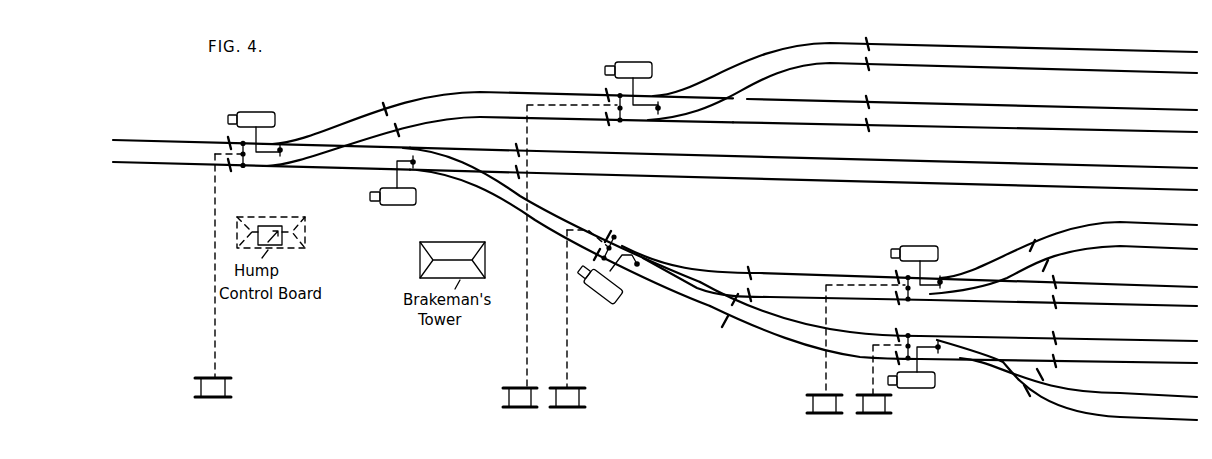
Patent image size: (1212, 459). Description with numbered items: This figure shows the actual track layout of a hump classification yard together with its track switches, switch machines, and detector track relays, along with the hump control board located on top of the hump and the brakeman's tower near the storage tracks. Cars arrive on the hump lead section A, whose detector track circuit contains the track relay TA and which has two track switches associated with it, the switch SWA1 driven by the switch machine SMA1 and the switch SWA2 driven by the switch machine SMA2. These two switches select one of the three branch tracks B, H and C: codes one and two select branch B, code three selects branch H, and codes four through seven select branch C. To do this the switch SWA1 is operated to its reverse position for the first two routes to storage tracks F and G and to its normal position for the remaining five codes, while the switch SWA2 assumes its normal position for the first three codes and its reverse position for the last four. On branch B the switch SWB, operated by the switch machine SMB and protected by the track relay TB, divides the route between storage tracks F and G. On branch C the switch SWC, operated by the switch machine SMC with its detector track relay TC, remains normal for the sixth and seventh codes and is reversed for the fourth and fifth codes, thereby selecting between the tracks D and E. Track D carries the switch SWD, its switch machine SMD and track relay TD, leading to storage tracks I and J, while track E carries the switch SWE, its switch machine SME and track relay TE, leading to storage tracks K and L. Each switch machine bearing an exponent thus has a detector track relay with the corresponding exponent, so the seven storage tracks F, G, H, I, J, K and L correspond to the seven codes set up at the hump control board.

The detector track circuit section A is at (261, 154).
The branch track B is at (500, 127).
The branch track C is at (556, 227).
The track section D is at (781, 275).
The track section E is at (810, 323).
The storage track F is at (922, 79).
The storage track G is at (965, 114).
The branch track H is at (803, 167).
The storage track I is at (1063, 258).
The storage track J is at (1063, 292).
The storage track K is at (1058, 349).
The storage track L is at (1067, 380).
The switch machine SMA1 is at (262, 112).
The track switch SWA1 is at (270, 163).
The switch machine SMA2 is at (401, 206).
The track switch SWA2 is at (419, 153).
The switch machine SMB is at (650, 62).
The track switch SWB is at (662, 112).
The switch machine SMC is at (616, 301).
The track switch SWC is at (638, 260).
The switch machine SMD is at (922, 238).
The track switch SWD is at (943, 278).
The switch machine SME is at (935, 388).
The track switch SWE is at (941, 343).
The track relay TA is at (216, 381).
The track relay TB is at (521, 391).
The track relay TC is at (570, 391).
The track relay TD is at (812, 393).
The track relay TE is at (860, 393).